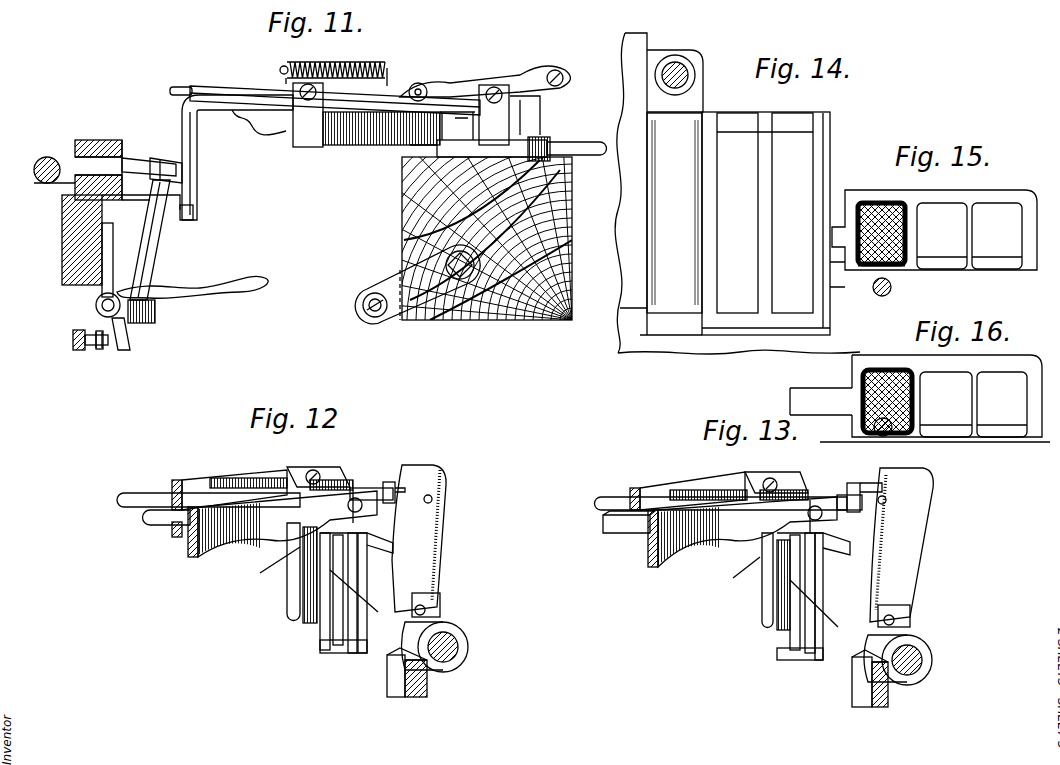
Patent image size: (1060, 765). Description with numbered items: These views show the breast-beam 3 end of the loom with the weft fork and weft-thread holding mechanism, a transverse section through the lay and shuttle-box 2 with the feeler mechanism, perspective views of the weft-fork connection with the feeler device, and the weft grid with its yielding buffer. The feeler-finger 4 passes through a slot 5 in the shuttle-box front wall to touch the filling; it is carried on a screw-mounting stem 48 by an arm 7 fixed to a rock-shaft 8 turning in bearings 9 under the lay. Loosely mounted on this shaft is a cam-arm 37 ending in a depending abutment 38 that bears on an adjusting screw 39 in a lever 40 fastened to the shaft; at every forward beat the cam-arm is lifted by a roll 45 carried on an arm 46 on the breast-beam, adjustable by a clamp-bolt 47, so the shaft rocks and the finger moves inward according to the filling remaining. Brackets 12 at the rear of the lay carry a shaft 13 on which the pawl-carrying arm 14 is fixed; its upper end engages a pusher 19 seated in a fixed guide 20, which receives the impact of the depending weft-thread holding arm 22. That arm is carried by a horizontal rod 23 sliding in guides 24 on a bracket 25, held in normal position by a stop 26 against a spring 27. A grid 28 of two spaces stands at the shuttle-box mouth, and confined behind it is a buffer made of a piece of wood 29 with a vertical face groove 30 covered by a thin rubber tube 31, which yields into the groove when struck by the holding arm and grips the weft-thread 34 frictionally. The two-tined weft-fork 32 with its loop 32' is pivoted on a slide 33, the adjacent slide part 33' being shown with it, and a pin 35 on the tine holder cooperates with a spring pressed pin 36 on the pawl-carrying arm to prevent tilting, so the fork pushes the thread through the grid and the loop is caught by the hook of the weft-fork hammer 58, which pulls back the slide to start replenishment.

In FIG. 11, the shuttle-box 2 is at (101, 147).
In FIG. 11, the breast-beam 3 is at (402, 207).
In FIG. 11, the feeler-finger 4 is at (114, 165).
In FIG. 11, the slot 5 is at (73, 161).
In FIG. 11, the arm 7 is at (166, 253).
In FIG. 11, the shaft 8 is at (95, 303).
In FIG. 11, the bearings 9 is at (110, 250).
In FIG. 12, the brackets 12 is at (442, 668).
In FIG. 13, the brackets 12 is at (906, 681).
In FIG. 12, the shaft 13 is at (456, 646).
In FIG. 13, the shaft 13 is at (920, 656).
In FIG. 12, the arm 14 is at (425, 525).
In FIG. 13, the arm 14 is at (905, 528).
In FIG. 14, the pusher 19 is at (692, 67).
In FIG. 12, the pusher 19 is at (432, 500).
In FIG. 13, the pusher 19 is at (890, 503).
In FIG. 14, the fixed guide 20 is at (703, 103).
In FIG. 11, the depending arm 22 is at (195, 218).
In FIG. 15, the depending arm 22 is at (885, 298).
In FIG. 16, the depending arm 22 is at (891, 436).
In FIG. 12, the depending arm 22 is at (289, 596).
In FIG. 13, the depending arm 22 is at (764, 600).
In FIG. 11, the horizontal rod 23 is at (238, 92).
In FIG. 12, the horizontal rod 23 is at (140, 492).
In FIG. 13, the horizontal rod 23 is at (607, 497).
In FIG. 11, the guides 24 is at (303, 147).
In FIG. 11, the bracket 25 is at (372, 146).
In FIG. 11, the stop 26 is at (518, 95).
In FIG. 11, the spring 27 is at (342, 63).
In FIG. 14, the grid 28 is at (822, 153).
In FIG. 15, the grid 28 is at (983, 196).
In FIG. 16, the grid 28 is at (988, 368).
In FIG. 12, the grid 28 is at (346, 646).
In FIG. 13, the grid 28 is at (800, 646).
In FIG. 15, the piece of wood 29 is at (875, 201).
In FIG. 16, the piece of wood 29 is at (880, 372).
In FIG. 15, the vertical face groove 30 is at (906, 267).
In FIG. 16, the vertical face groove 30 is at (903, 420).
In FIG. 14, the thin rubber tube 31 is at (674, 213).
In FIG. 15, the thin rubber tube 31 is at (870, 269).
In FIG. 16, the thin rubber tube 31 is at (908, 437).
In FIG. 12, the thin rubber tube 31 is at (305, 626).
In FIG. 13, the thin rubber tube 31 is at (732, 585).
In FIG. 11, the weft-fork 32 is at (237, 157).
In FIG. 12, the weft-fork 32 is at (318, 463).
In FIG. 13, the weft-fork 32 is at (776, 470).
In FIG. 12, the loop 32' is at (303, 489).
In FIG. 13, the loop 32' is at (758, 526).
In FIG. 11, the slide 33 is at (259, 129).
In FIG. 12, the slide 33 is at (282, 529).
In FIG. 13, the slide 33 is at (742, 542).
In FIG. 12, the block 33' is at (229, 493).
In FIG. 13, the block 33' is at (682, 484).
In FIG. 16, the weft-thread 34 is at (985, 443).
In FIG. 12, the weft-thread 34 is at (270, 567).
In FIG. 13, the weft-thread 34 is at (735, 577).
In FIG. 11, the pin 35 is at (180, 87).
In FIG. 12, the pin 35 is at (378, 487).
In FIG. 13, the pin 35 is at (835, 495).
In FIG. 12, the spring pressed pin 36 is at (396, 484).
In FIG. 13, the spring pressed pin 36 is at (862, 483).
In FIG. 11, the arm 37 is at (214, 306).
In FIG. 11, the depending abutment 38 is at (122, 346).
In FIG. 11, the adjusting screw 39 is at (73, 338).
In FIG. 11, the lever 40 is at (100, 349).
In FIG. 11, the roll 45 is at (362, 314).
In FIG. 11, the arm 46 is at (417, 284).
In FIG. 11, the clamp-bolt 47 is at (460, 265).
In FIG. 11, the screw-mounting stem 48 is at (160, 166).
In FIG. 12, the weft-fork hammer 58 is at (150, 517).
In FIG. 13, the weft-fork hammer 58 is at (605, 522).